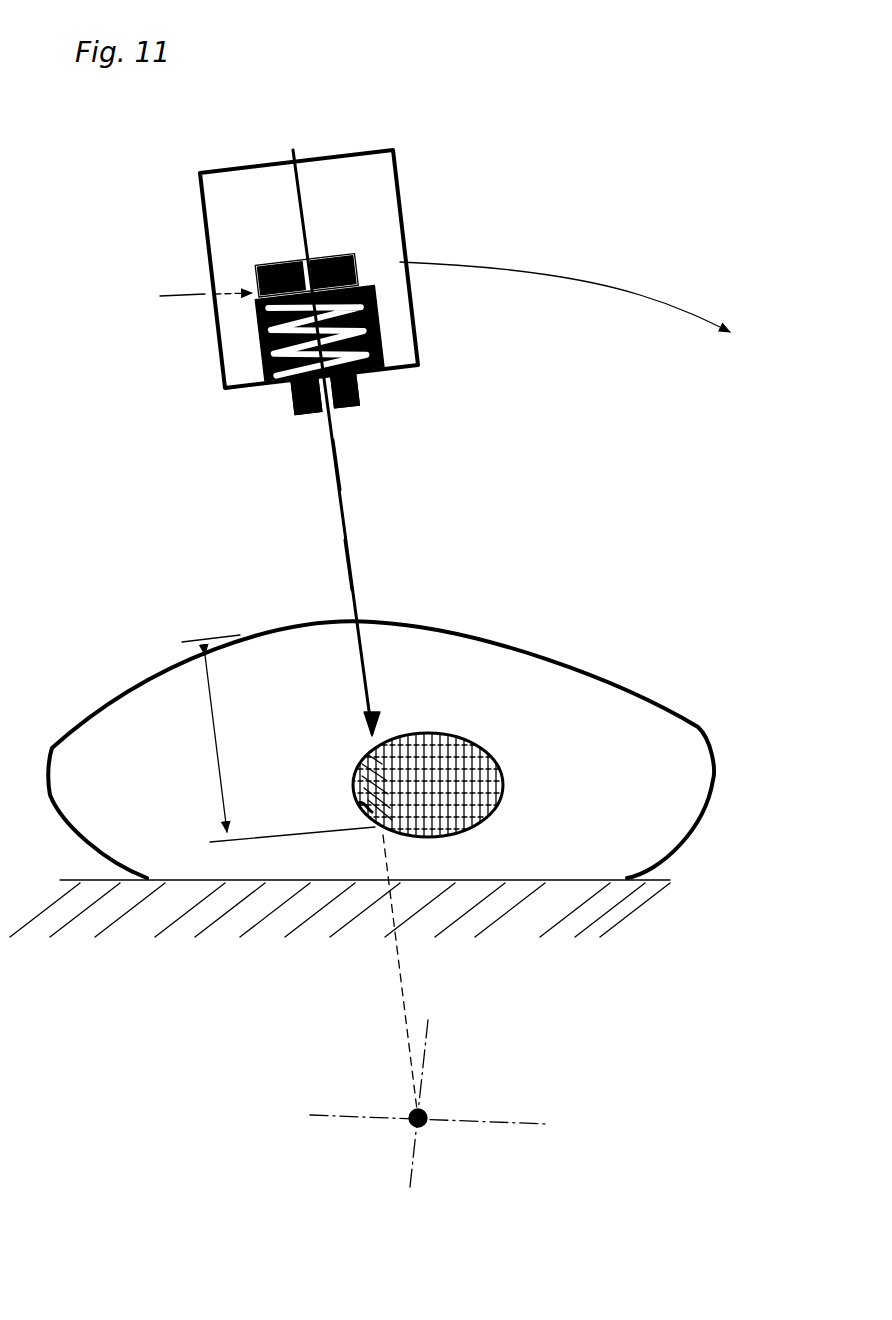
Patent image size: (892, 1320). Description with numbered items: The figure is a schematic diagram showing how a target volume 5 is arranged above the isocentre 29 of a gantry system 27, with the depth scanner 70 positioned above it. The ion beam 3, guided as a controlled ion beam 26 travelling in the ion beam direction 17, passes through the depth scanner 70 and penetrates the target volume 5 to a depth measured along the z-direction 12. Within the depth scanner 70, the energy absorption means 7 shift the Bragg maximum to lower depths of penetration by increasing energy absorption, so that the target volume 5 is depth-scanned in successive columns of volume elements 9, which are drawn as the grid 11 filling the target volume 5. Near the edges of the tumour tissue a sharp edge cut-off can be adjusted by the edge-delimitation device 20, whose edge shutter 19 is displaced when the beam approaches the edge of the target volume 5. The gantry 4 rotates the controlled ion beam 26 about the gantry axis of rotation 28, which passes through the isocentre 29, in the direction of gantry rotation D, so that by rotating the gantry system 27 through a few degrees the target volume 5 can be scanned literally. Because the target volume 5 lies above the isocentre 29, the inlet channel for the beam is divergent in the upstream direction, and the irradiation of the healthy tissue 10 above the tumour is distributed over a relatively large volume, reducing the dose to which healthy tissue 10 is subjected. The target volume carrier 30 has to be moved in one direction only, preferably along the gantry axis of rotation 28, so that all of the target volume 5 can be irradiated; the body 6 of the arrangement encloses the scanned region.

The depth scanner 70 is at (228, 155).
The ion beam 3 is at (307, 190).
The gantry system 27 is at (478, 182).
The direction of gantry rotation D is at (543, 273).
The edge-delimitation device 20 is at (306, 395).
The edge shutter 19 is at (345, 389).
The energy absorption means 7 is at (252, 358).
The controlled ion beam 26 is at (337, 482).
The ion beam direction 17 is at (348, 563).
The body 6 is at (500, 552).
The gantry 4 is at (202, 572).
The healthy tissue 10 is at (530, 704).
The z-direction 12 is at (278, 738).
The target volume 5 is at (425, 733).
The grid 11 is at (490, 760).
The volume elements 9 is at (503, 778).
The target volume carrier 30 is at (192, 910).
The isocentre 29 is at (432, 1110).
The gantry axis of rotation 28 is at (425, 1128).